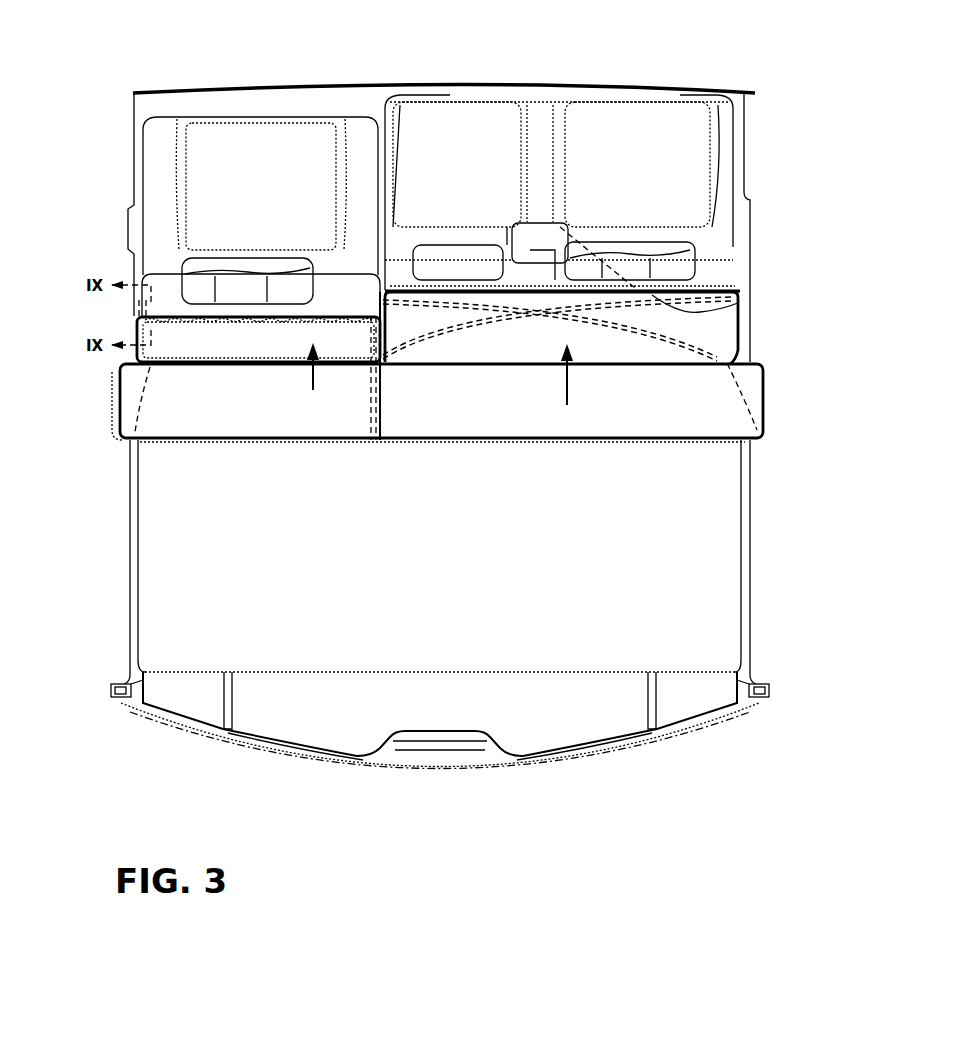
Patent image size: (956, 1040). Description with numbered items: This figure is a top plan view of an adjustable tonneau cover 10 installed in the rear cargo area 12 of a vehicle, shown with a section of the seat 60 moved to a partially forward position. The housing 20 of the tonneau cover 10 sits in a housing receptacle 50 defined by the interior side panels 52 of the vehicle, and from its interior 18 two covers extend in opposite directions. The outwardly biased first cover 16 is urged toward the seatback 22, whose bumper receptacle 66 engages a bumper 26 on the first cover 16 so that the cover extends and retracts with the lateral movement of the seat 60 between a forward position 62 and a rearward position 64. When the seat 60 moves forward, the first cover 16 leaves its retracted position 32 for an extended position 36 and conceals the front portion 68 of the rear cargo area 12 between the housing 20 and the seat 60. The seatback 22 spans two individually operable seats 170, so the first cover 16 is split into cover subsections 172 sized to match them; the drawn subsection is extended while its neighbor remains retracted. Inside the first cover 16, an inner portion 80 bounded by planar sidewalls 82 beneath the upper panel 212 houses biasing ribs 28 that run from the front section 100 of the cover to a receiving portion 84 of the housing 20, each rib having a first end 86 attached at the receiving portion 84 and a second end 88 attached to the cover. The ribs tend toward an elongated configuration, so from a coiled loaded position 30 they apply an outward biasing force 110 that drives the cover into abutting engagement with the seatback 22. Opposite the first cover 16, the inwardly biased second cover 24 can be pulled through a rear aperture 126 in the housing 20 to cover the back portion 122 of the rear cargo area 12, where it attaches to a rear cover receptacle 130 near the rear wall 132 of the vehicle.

The adjustable tonneau cover 10 is at (96, 418).
The rear cargo area 12 is at (487, 774).
The first cover 16 is at (741, 340).
The interior 18 is at (712, 413).
The housing 20 is at (211, 416).
The seatback 22 is at (746, 317).
The second cover 24 is at (750, 533).
The bumper 26 is at (703, 293).
The biasing rib 28 is at (528, 290).
The loaded position 30 is at (132, 378).
The retracted position 32 is at (259, 305).
The extended position 36 is at (551, 276).
The housing receptacle 50 is at (767, 433).
The interior side panels 52 is at (753, 478).
The seat 60 is at (463, 93).
The forward position 62 is at (655, 93).
The rearward position 64 is at (178, 106).
The bumper receptacle 66 is at (703, 295).
The front portion 68 is at (632, 346).
The inner portion 80 is at (545, 333).
The planar sidewalls 82 is at (741, 350).
The receiving portion 84 is at (387, 330).
The first end 86 is at (388, 360).
The second end 88 is at (377, 330).
The front section 100 is at (337, 318).
The outward biasing force 110 is at (566, 392).
The back portion 122 is at (132, 572).
The rear aperture 126 is at (131, 440).
The rear cover receptacle 130 is at (121, 699).
The rear wall 132 is at (124, 706).
The individually operable seats 170 is at (133, 165).
The cover subsections 172 is at (176, 305).
The upper panel 212 is at (277, 352).